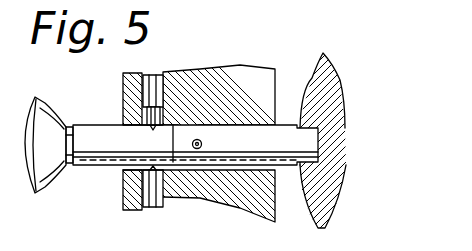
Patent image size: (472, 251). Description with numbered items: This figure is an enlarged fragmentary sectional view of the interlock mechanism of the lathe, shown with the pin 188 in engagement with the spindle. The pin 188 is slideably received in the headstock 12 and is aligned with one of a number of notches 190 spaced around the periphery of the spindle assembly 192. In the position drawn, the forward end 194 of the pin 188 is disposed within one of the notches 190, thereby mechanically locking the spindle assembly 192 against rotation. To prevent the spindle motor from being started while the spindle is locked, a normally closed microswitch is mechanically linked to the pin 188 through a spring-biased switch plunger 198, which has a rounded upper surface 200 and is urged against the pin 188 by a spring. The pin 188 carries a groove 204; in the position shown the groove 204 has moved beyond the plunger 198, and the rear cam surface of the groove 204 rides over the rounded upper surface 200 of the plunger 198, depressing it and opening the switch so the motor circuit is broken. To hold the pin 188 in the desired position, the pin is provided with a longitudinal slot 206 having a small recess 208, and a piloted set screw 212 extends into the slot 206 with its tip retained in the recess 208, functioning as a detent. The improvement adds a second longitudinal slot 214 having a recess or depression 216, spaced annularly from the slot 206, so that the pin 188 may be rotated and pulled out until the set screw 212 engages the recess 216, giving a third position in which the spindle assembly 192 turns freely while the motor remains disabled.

The headstock 12 is at (191, 136).
The pin 188 is at (77, 124).
The notches 190 is at (316, 148).
The spindle assembly 192 is at (291, 137).
The forward end 194 is at (313, 168).
The switch plunger 198 is at (160, 208).
The rounded upper surface 200 is at (126, 182).
The groove 204 is at (219, 196).
The longitudinal slot 206 is at (151, 145).
The recess 208 is at (219, 95).
The piloted set screw 212 is at (156, 76).
The second longitudinal slot 214 is at (197, 137).
The recess or depression 216 is at (203, 144).